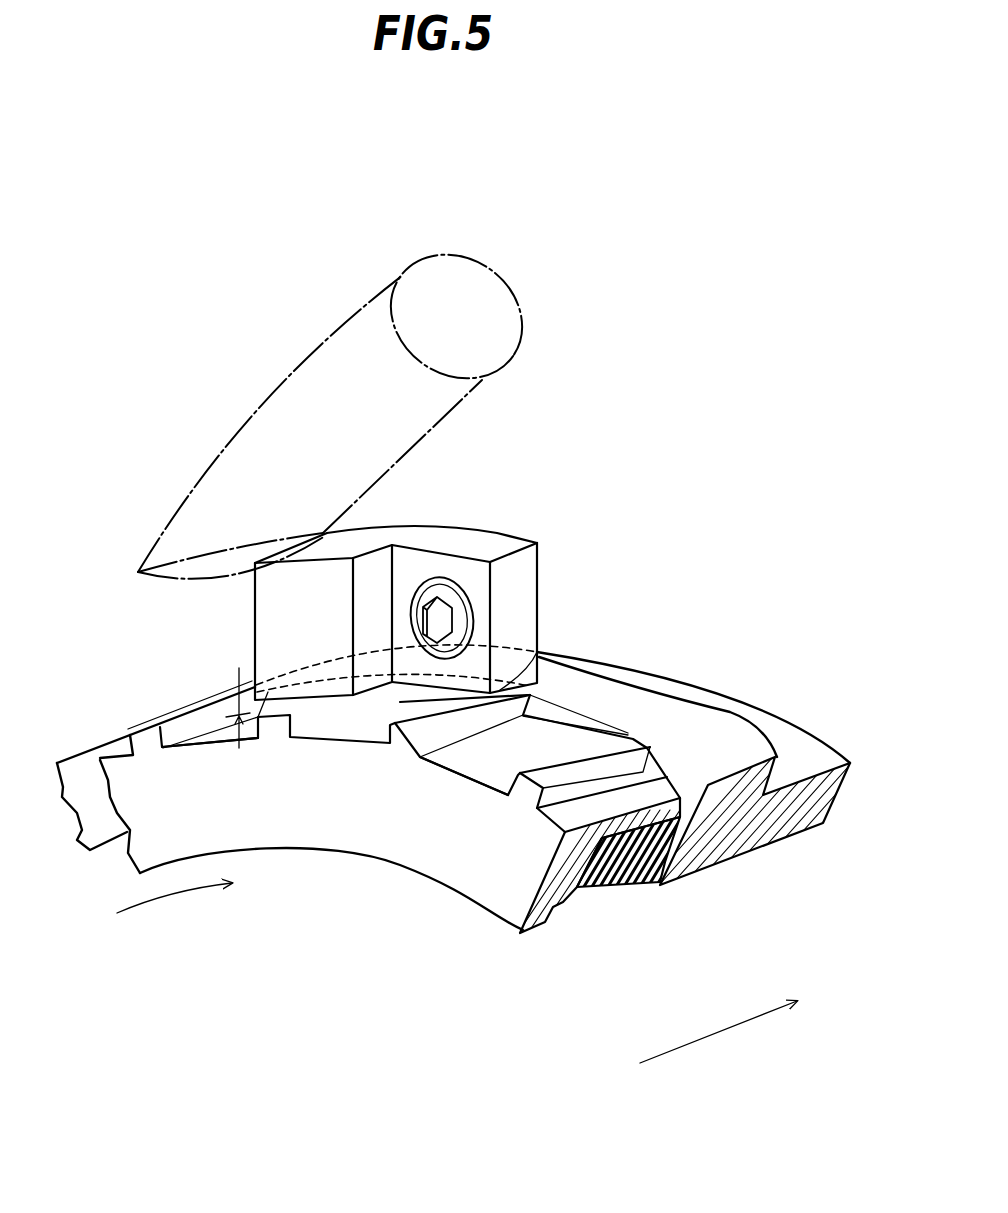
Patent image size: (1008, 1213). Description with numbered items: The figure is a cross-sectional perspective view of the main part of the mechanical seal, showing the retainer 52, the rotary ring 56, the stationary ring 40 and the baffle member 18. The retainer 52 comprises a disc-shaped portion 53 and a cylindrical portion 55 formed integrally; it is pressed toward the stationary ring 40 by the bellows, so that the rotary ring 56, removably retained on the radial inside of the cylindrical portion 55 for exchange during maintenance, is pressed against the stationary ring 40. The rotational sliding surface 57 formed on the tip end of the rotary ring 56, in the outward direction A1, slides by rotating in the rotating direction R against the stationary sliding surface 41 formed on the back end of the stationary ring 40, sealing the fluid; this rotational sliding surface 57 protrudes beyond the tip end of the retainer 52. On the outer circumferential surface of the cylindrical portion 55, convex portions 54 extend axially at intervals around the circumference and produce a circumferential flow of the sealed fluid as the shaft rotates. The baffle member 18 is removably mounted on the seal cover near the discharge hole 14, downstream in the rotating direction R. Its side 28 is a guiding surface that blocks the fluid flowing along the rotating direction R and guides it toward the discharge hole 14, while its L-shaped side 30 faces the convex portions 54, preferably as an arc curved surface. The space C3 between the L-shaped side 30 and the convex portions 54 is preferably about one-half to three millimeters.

The discharge hole 14 is at (270, 393).
The baffle member 18 is at (455, 530).
The side of the flow guiding portion 28 is at (250, 612).
The L-shaped side 30 is at (330, 700).
The stationary ring 40 is at (518, 796).
The stationary sliding surface 41 is at (680, 783).
The retainer 52 is at (468, 870).
The disc-shaped portion 53 is at (554, 907).
The convex portions 54 is at (610, 753).
The cylindrical portion 55 is at (500, 762).
The rotary ring 56 is at (628, 862).
The rotational sliding surface 57 is at (682, 843).
The space C3 is at (240, 727).
The rotating direction R is at (167, 895).
The outward direction A1 is at (707, 1040).